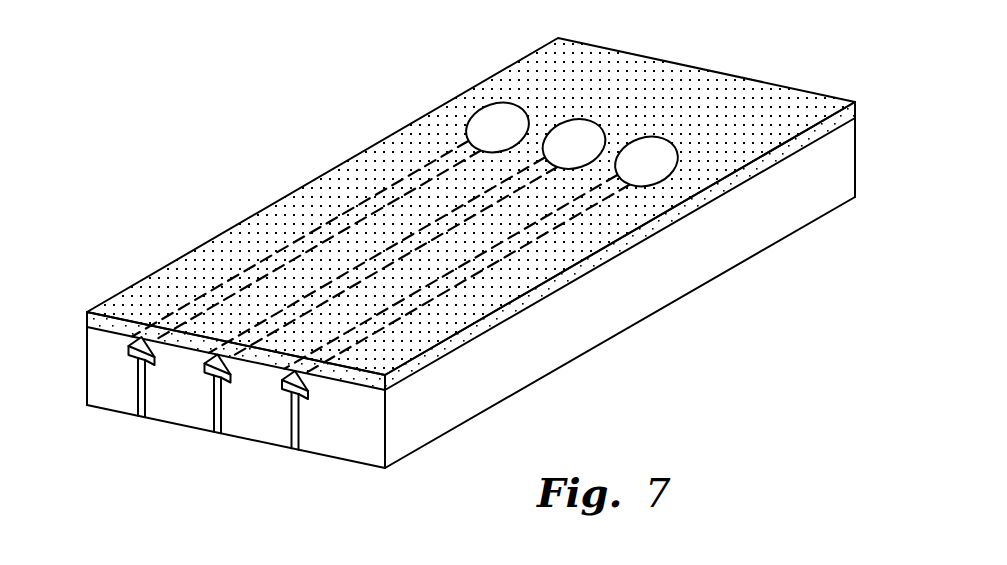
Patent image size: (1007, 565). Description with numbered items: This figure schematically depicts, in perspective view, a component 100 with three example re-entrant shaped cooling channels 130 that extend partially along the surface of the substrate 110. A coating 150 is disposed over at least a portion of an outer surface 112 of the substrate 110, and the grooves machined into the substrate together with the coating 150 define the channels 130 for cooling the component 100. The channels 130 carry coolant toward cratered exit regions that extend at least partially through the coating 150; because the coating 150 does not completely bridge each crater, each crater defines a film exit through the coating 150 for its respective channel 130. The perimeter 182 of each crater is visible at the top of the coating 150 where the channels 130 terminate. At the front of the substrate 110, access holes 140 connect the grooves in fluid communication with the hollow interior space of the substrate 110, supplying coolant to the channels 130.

The component 100 is at (93, 213).
The substrate 110 is at (471, 307).
The outer surface 112 is at (412, 385).
The channels 130 is at (341, 318).
The access holes 140 is at (293, 443).
The coating 150 is at (747, 102).
The perimeter 182 is at (630, 158).